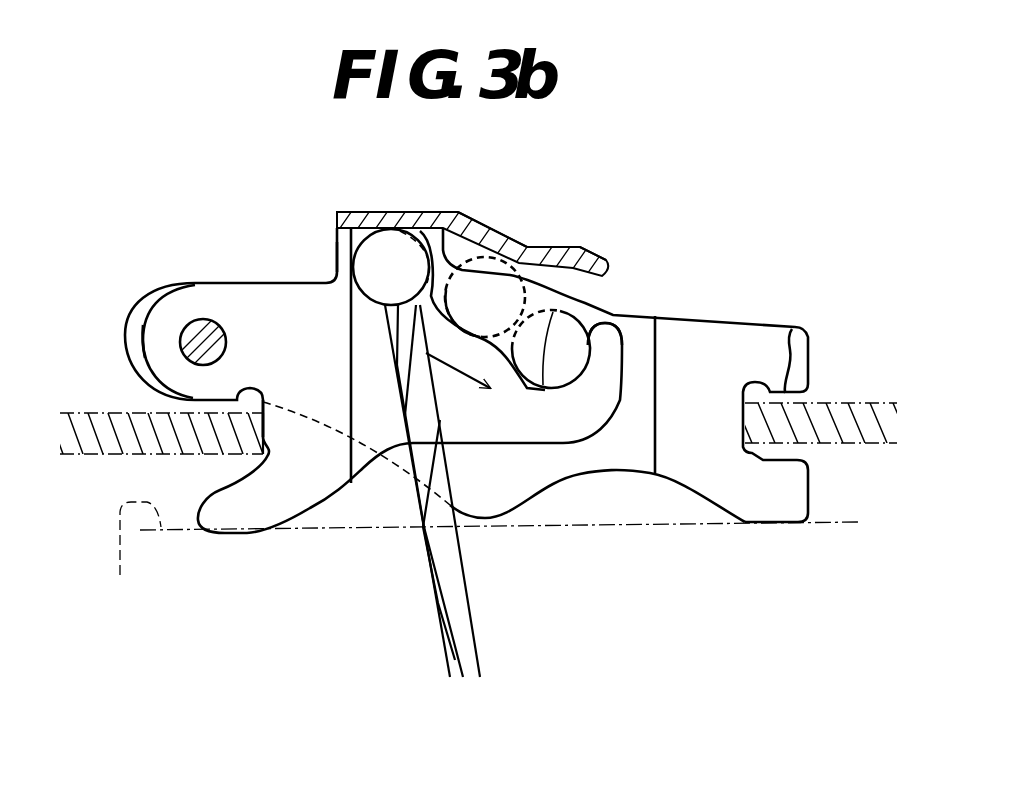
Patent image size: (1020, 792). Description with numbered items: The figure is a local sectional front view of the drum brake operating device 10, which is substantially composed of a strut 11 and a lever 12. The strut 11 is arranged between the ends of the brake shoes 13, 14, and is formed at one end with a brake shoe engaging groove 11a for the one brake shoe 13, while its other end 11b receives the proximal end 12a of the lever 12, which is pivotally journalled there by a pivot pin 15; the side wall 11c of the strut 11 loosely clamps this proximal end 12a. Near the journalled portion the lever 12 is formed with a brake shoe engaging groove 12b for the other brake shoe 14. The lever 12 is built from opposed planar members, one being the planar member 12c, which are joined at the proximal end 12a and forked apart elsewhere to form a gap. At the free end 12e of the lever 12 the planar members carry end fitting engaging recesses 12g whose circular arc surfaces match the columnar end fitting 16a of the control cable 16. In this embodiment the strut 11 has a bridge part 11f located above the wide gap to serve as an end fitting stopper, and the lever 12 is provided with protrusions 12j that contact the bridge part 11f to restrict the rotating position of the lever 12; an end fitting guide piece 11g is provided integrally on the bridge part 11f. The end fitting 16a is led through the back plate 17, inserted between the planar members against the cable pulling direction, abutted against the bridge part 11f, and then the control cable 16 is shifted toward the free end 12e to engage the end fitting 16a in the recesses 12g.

The drum brake operating device 10 is at (153, 272).
The strut 11 is at (692, 308).
The brake shoe engaging groove 11a is at (798, 329).
The other end of the strut 11b is at (132, 322).
The side wall 11c is at (622, 456).
The bridge part 11f is at (380, 212).
The end fitting guide piece 11g is at (540, 247).
The lever 12 is at (334, 514).
The proximal end of the lever 12a is at (147, 350).
The brake shoe engaging groove 12b is at (234, 460).
The planar member 12c is at (380, 417).
The free end of the lever 12e is at (610, 347).
The end fitting engaging recess 12g is at (548, 326).
The protrusion 12j is at (351, 240).
The brake shoe 13 is at (850, 403).
The brake shoe 14 is at (100, 456).
The pivot pin 15 is at (203, 335).
The control cable 16 is at (470, 598).
The end fitting 16a is at (448, 212).
The back plate 17 is at (134, 554).